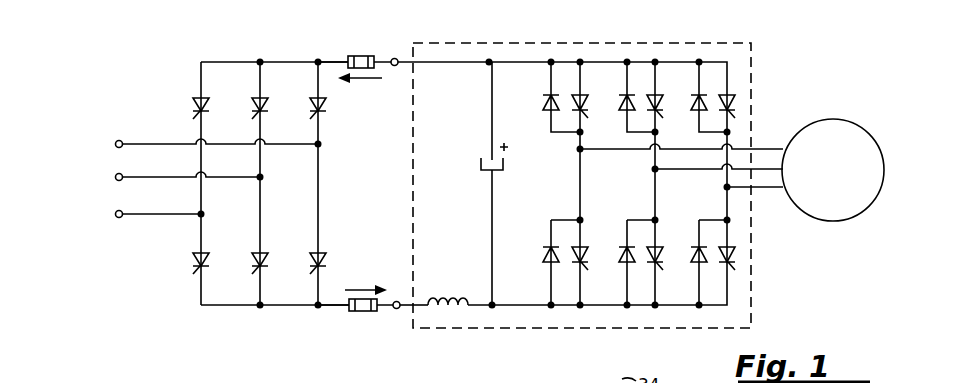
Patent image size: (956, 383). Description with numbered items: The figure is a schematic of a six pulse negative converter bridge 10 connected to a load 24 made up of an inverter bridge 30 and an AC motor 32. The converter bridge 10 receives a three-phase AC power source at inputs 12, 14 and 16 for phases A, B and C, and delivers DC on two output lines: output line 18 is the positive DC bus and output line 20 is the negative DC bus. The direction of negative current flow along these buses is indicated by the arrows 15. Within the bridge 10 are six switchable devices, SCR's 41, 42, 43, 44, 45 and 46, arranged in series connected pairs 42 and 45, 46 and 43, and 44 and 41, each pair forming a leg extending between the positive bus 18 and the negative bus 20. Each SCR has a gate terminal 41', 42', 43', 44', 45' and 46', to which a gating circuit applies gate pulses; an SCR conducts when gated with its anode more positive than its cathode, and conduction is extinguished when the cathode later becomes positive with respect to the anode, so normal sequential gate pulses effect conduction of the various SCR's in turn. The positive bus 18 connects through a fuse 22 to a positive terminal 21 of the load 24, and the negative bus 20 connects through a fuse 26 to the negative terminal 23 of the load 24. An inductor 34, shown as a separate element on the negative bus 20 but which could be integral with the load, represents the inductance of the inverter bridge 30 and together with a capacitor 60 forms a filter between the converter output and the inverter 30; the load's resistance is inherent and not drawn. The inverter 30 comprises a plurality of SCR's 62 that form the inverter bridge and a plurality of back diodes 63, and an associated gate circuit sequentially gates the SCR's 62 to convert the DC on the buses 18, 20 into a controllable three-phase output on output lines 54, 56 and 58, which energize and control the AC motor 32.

The negative converter bridge 10 is at (261, 51).
The input 12 is at (173, 146).
The input 14 is at (176, 179).
The input 16 is at (178, 216).
The output line 18 is at (336, 60).
The output line 20 is at (340, 308).
The positive terminal 21 is at (396, 58).
The fuse 22 is at (360, 56).
The negative terminal 23 is at (399, 311).
The load 24 is at (635, 40).
The fuse 26 is at (361, 312).
The arrows 15 is at (364, 78).
The inverter bridge 30 is at (760, 64).
The AC motor 32 is at (826, 119).
The inductor 34 is at (450, 297).
The SCR 41 is at (334, 245).
The SCR 42 is at (215, 91).
The SCR 43 is at (275, 245).
The SCR 44 is at (338, 117).
The SCR 45 is at (216, 245).
The SCR 46 is at (274, 91).
The gate terminal 41' is at (294, 283).
The gate terminal 42' is at (170, 117).
The gate terminal 43' is at (235, 283).
The gate terminal 44' is at (291, 124).
The gate terminal 45' is at (174, 279).
The gate terminal 46' is at (232, 124).
The output line 54 is at (769, 148).
The output line 56 is at (737, 171).
The output line 58 is at (770, 189).
The capacitor 60 is at (501, 172).
The SCRs 62 is at (589, 118).
The back diodes 63 is at (544, 103).